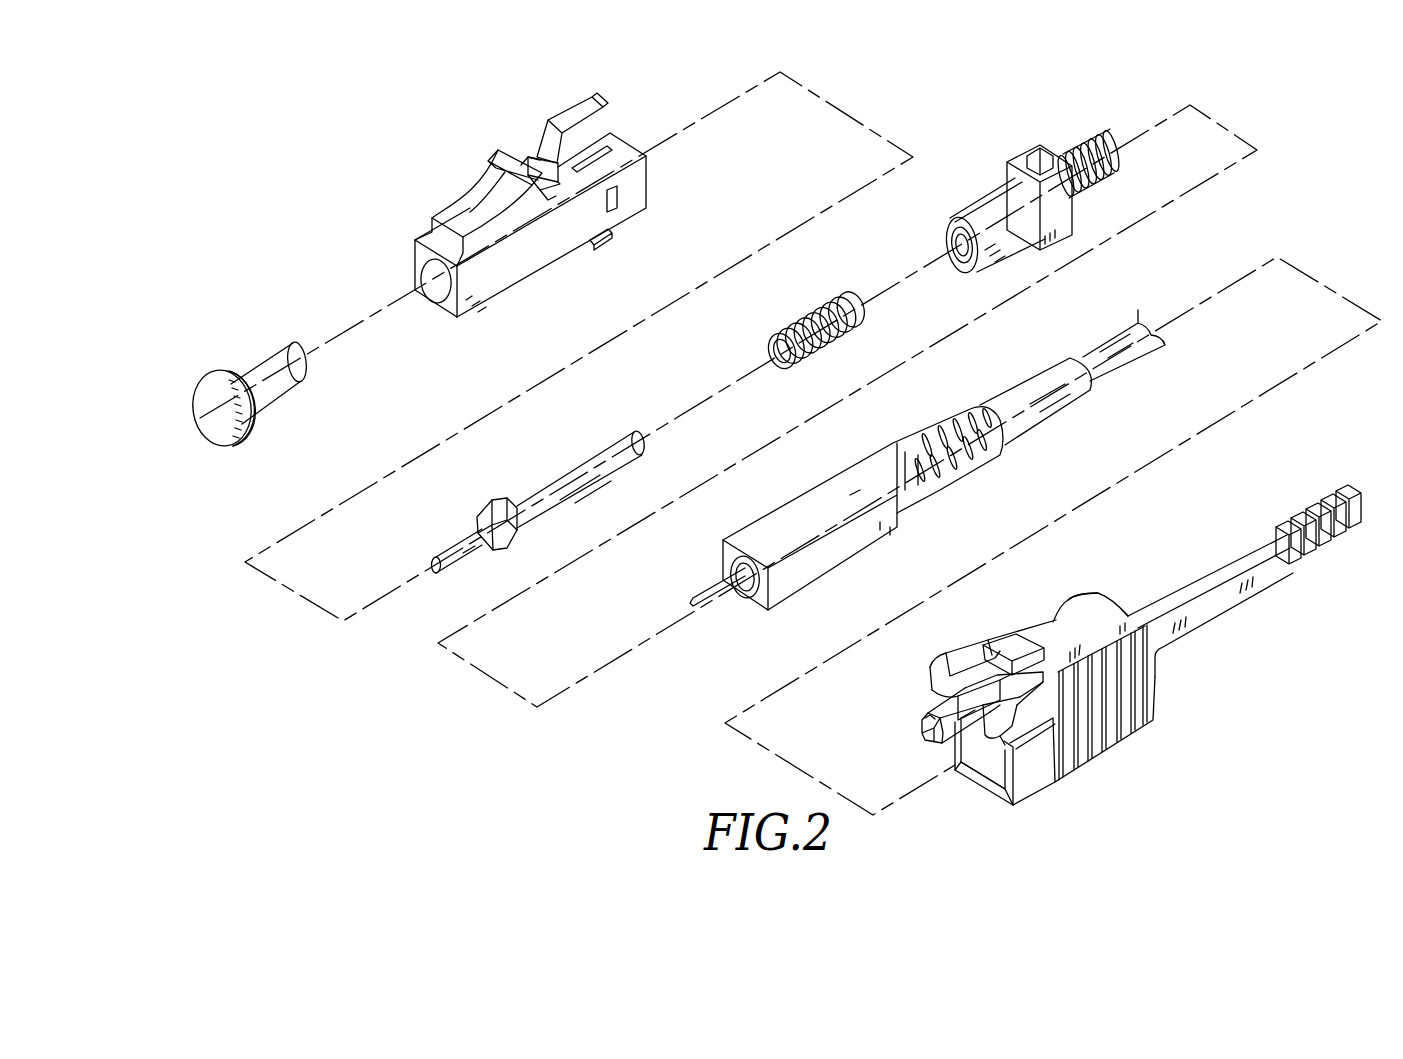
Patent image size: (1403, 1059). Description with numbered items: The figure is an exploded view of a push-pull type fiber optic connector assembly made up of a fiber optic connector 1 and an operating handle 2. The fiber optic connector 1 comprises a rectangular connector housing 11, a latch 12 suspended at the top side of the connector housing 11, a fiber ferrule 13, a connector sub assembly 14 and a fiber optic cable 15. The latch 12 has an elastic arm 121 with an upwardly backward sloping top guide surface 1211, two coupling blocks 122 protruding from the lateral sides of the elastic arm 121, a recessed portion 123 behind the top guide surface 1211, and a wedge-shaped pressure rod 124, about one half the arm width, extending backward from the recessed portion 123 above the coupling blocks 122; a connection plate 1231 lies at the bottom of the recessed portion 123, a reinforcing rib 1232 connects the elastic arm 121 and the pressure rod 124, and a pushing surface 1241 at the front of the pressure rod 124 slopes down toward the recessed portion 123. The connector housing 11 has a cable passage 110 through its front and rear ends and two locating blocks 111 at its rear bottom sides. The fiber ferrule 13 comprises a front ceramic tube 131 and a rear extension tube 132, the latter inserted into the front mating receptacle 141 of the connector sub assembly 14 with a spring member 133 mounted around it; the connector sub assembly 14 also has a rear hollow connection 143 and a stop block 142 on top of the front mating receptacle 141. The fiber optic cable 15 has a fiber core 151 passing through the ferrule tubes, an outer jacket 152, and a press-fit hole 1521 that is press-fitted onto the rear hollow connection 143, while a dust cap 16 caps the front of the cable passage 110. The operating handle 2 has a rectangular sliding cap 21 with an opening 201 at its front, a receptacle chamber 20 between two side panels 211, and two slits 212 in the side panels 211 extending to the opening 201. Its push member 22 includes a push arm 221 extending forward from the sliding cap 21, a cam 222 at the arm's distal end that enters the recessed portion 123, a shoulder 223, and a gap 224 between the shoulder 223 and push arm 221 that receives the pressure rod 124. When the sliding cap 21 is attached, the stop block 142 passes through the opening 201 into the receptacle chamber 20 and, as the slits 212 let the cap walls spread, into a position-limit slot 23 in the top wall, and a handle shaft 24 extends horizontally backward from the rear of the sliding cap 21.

The fiber optic connector 1 is at (398, 238).
The connector housing 11 is at (493, 290).
The cable passage 110 is at (432, 300).
The locating blocks 111 is at (604, 242).
The latch 12 is at (380, 178).
The elastic arm 121 is at (487, 195).
The top guide surface 1211 is at (502, 175).
The coupling blocks 122 is at (541, 190).
The recessed portion 123 is at (525, 145).
The connection plate 1231 is at (545, 192).
The reinforcing rib 1232 is at (527, 158).
The wedge-shaped pressure rod 124 is at (575, 115).
The pushing surface 1241 is at (548, 138).
The fiber ferrule 13 is at (493, 510).
The front ceramic tube 131 is at (453, 553).
The rear extension tube 132 is at (562, 483).
The spring member 133 is at (804, 312).
The connector sub assembly 14 is at (925, 218).
The front mating receptacle 141 is at (1025, 160).
The stop block 142 is at (1045, 160).
The rear hollow connection 143 is at (1105, 138).
The fiber optic cable 15 is at (984, 385).
The fiber core 151 is at (717, 600).
The outer jacket 152 is at (880, 530).
The press-fit hole 1521 is at (770, 580).
The dust cap 16 is at (257, 373).
The operating handle 2 is at (1126, 588).
The receptacle chamber 20 is at (995, 775).
The opening 201 is at (977, 772).
The rectangular sliding cap 21 is at (1090, 640).
The side panels 211 is at (1098, 755).
The slits 212 is at (1040, 732).
The push member 22 is at (912, 753).
The push arm 221 is at (958, 722).
The cam 222 is at (920, 725).
The shoulder 223 is at (957, 663).
The gap 224 is at (975, 657).
The position-limit slot 23 is at (1057, 633).
The handle shaft 24 is at (1260, 573).